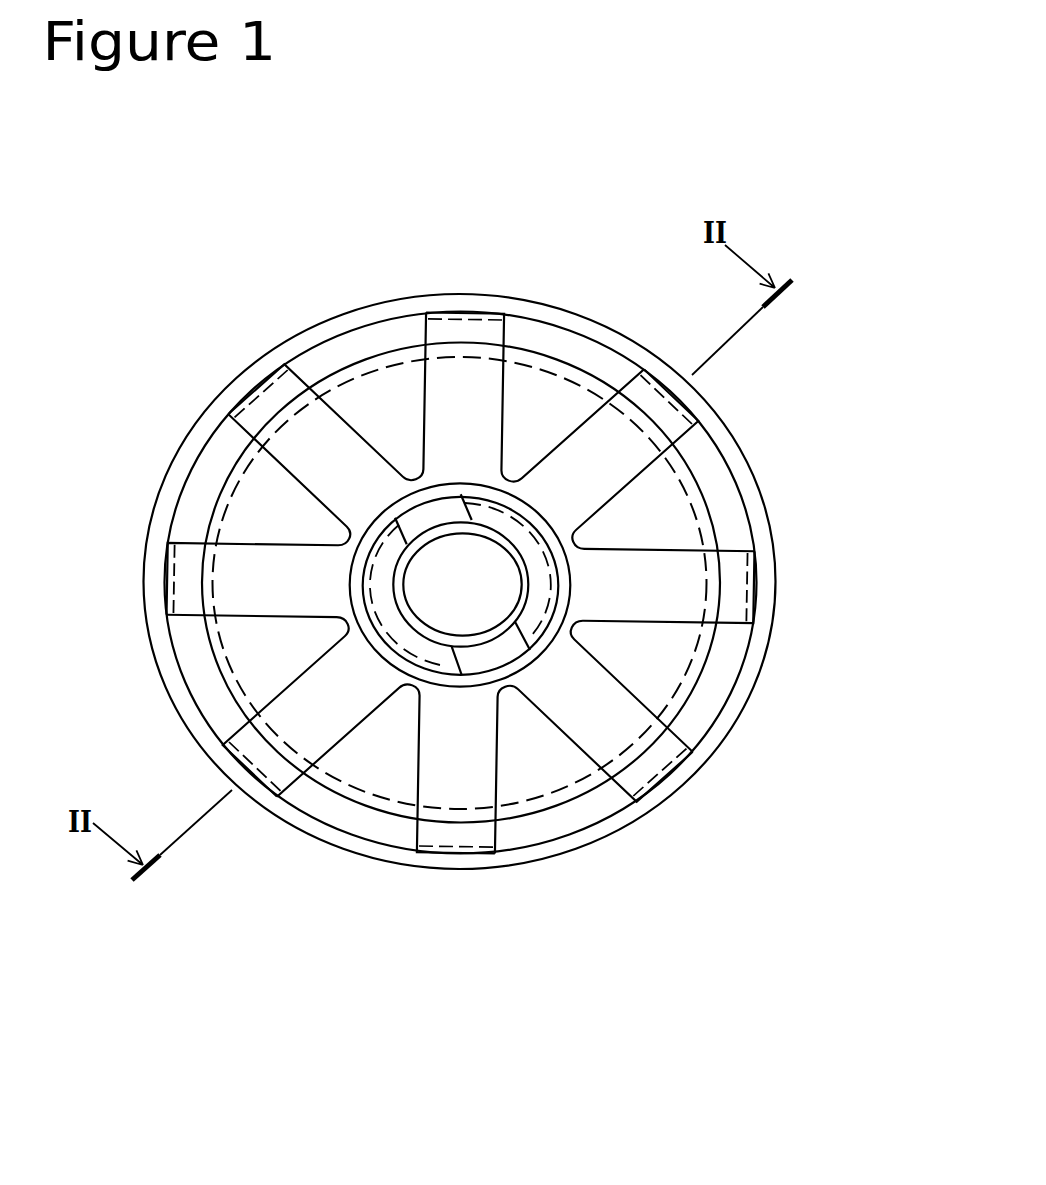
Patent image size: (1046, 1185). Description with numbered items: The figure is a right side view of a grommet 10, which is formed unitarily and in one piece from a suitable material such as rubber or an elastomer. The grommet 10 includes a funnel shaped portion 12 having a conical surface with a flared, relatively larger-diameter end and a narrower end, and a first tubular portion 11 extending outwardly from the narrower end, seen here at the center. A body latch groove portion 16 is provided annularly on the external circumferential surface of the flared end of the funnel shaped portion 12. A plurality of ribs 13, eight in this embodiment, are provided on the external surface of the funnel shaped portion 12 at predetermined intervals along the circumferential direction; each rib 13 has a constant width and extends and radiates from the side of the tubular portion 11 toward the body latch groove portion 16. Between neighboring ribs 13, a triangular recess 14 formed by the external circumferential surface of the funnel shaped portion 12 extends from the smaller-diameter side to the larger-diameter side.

The grommet 10 is at (121, 264).
The first tubular portion 11 is at (553, 642).
The funnel shaped portion 12 is at (715, 652).
The rib 13 is at (469, 388).
The triangular recess 14 is at (523, 792).
The body latch groove portion 16 is at (295, 342).